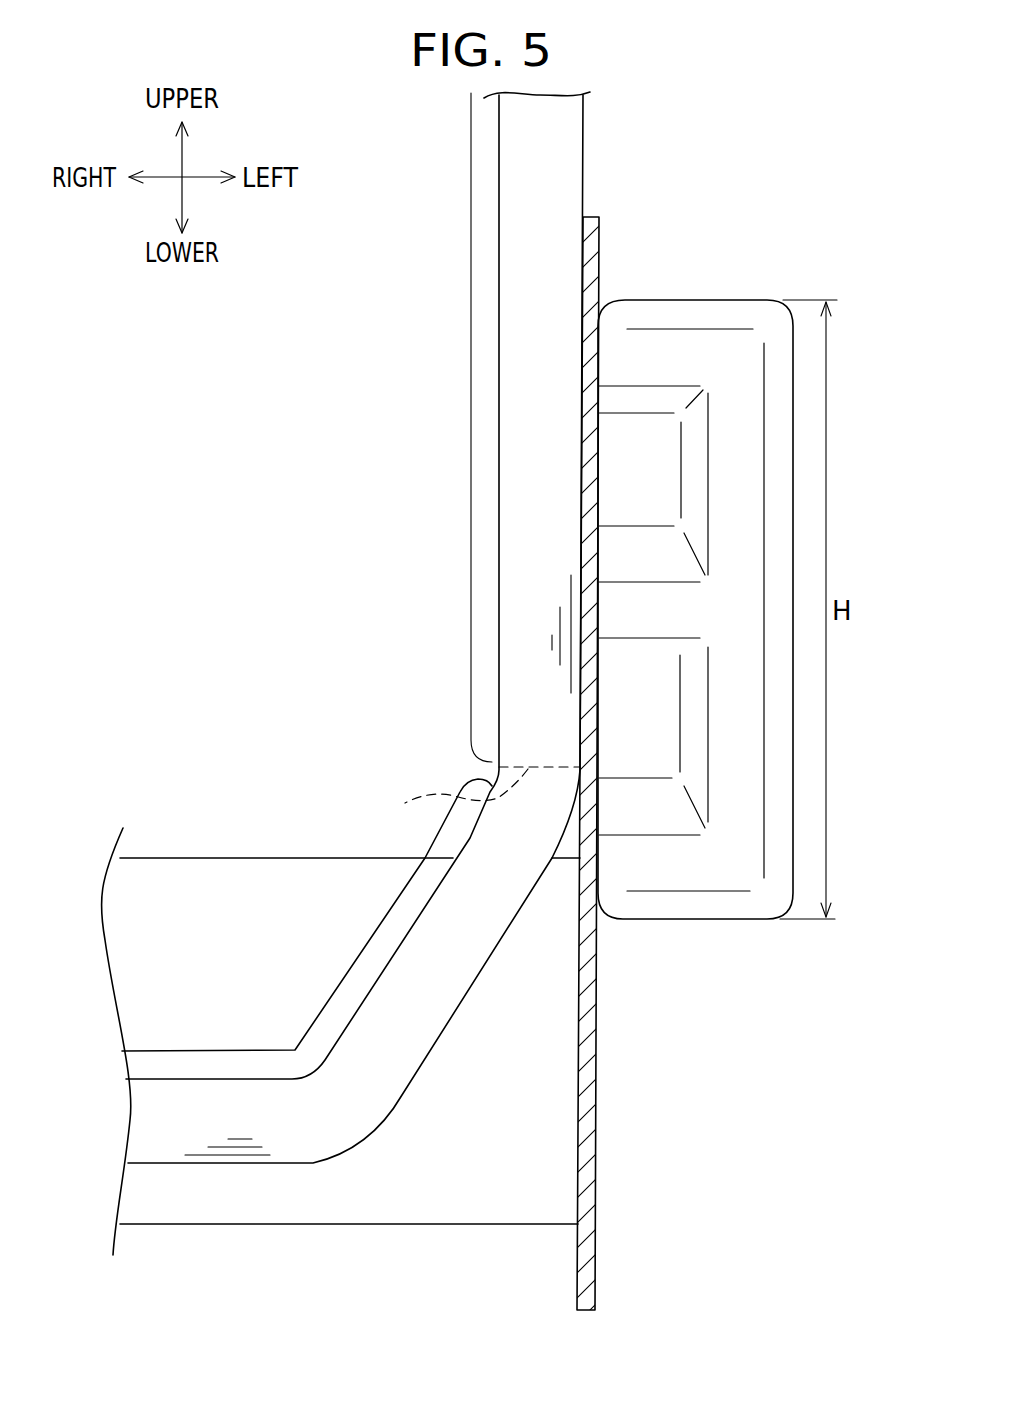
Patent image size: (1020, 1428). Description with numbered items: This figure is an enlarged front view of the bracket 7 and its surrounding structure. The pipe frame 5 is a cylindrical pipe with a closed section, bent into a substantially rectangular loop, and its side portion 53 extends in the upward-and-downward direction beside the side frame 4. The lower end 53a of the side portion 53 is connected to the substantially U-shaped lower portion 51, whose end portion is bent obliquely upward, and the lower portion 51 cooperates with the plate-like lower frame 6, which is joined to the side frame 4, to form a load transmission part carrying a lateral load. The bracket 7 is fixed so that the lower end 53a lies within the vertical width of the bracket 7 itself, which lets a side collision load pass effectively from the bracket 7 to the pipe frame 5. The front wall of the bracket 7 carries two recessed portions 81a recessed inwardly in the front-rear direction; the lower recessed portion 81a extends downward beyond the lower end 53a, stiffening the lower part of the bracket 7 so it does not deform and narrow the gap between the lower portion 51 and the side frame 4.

The side frame 4 is at (599, 247).
The pipe frame 5 is at (583, 148).
The lower frame 6 is at (204, 883).
The bracket 7 is at (740, 287).
The lower portion 51 is at (221, 1051).
The side portion 53 is at (470, 400).
The lower end 53a is at (467, 795).
The recessed portion 81a is at (657, 448).